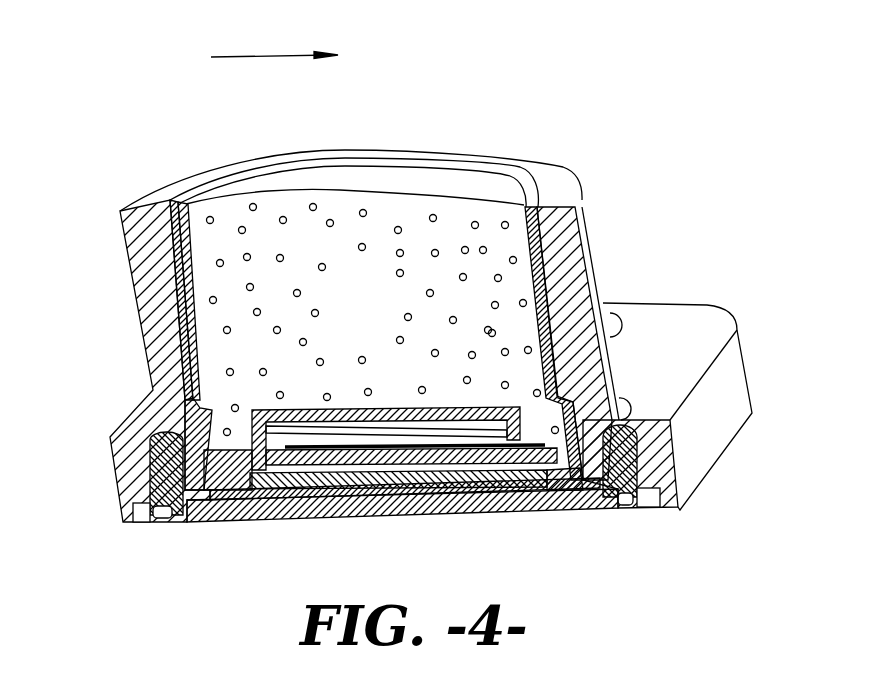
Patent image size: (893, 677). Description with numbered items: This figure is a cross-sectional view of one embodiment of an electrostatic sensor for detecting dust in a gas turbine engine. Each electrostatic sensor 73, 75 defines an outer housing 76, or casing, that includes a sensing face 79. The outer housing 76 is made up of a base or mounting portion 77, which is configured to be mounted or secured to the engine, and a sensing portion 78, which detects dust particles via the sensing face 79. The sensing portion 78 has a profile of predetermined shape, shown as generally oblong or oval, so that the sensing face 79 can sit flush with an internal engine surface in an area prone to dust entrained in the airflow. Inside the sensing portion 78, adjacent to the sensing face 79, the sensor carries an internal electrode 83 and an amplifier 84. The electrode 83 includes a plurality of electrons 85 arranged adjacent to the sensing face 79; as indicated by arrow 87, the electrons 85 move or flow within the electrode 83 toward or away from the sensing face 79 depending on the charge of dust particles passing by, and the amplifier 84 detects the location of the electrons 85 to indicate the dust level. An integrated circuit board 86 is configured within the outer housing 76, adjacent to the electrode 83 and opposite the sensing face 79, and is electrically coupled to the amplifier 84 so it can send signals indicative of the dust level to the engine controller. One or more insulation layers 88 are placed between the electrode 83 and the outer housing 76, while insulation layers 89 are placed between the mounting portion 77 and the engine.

The electrostatic sensor 73 is at (676, 267).
The electrostatic sensor 75 is at (554, 343).
The outer housing 76 is at (606, 257).
The mounting portion 77 is at (747, 368).
The sensing portion 78 is at (134, 310).
The sensing face 79 is at (465, 187).
The internal electrode 83 is at (196, 215).
The amplifier 84 is at (348, 455).
The electrons 85 is at (242, 228).
The integrated circuit board 86 is at (453, 460).
The arrow 87 is at (245, 57).
The insulation layer 88 is at (192, 347).
The insulation layer 89 is at (554, 478).